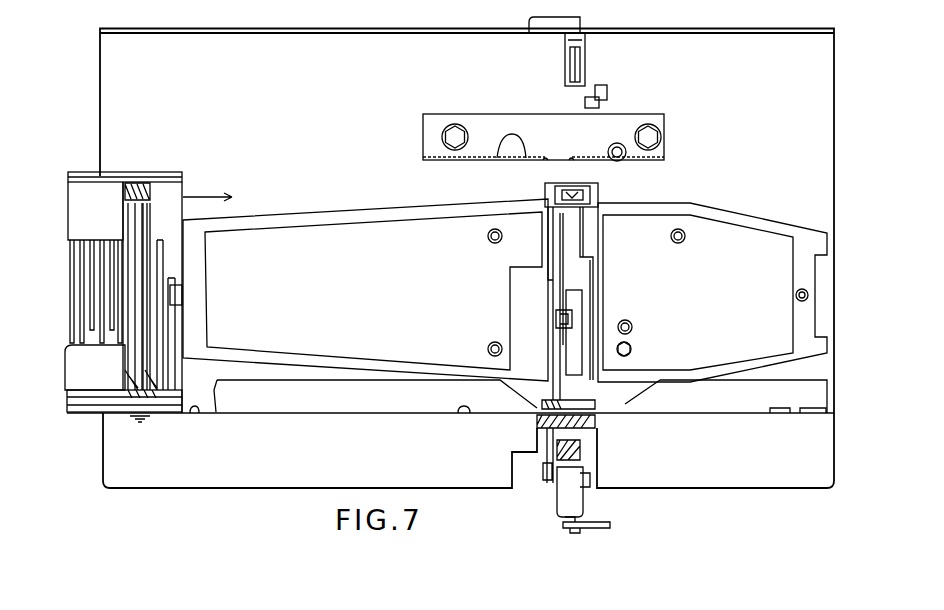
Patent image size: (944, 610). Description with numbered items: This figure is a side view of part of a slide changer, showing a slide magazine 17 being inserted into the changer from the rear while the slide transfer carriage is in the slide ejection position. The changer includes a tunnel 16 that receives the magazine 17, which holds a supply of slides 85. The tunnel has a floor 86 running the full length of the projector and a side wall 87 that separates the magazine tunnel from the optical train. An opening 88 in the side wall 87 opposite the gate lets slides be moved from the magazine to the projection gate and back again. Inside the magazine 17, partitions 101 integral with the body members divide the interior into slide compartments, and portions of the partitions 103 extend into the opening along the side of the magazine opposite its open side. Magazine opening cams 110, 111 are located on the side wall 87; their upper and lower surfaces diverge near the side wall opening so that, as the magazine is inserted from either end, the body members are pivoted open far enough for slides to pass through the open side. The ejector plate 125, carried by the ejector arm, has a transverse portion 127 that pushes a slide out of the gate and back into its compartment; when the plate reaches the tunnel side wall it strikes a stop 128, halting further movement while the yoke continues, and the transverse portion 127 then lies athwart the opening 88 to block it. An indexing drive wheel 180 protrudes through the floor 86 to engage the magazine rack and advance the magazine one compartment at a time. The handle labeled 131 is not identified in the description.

The side wall 87 is at (295, 48).
The top bracket 131 is at (553, 20).
The tunnel 16 is at (482, 156).
The opening 88 is at (545, 197).
The slide magazine 17 is at (127, 167).
The partitions 101 is at (150, 195).
The slides 85 is at (140, 230).
The portions of the partitions 103 is at (105, 345).
The floor 86 is at (193, 414).
The magazine opening cam 110 is at (390, 316).
The magazine opening cam 111 is at (730, 316).
The ejector plate 125 is at (575, 282).
The transverse portion of the ejector plate 127 is at (580, 302).
The stop 128 is at (556, 320).
The indexing drive wheel 180 is at (628, 396).